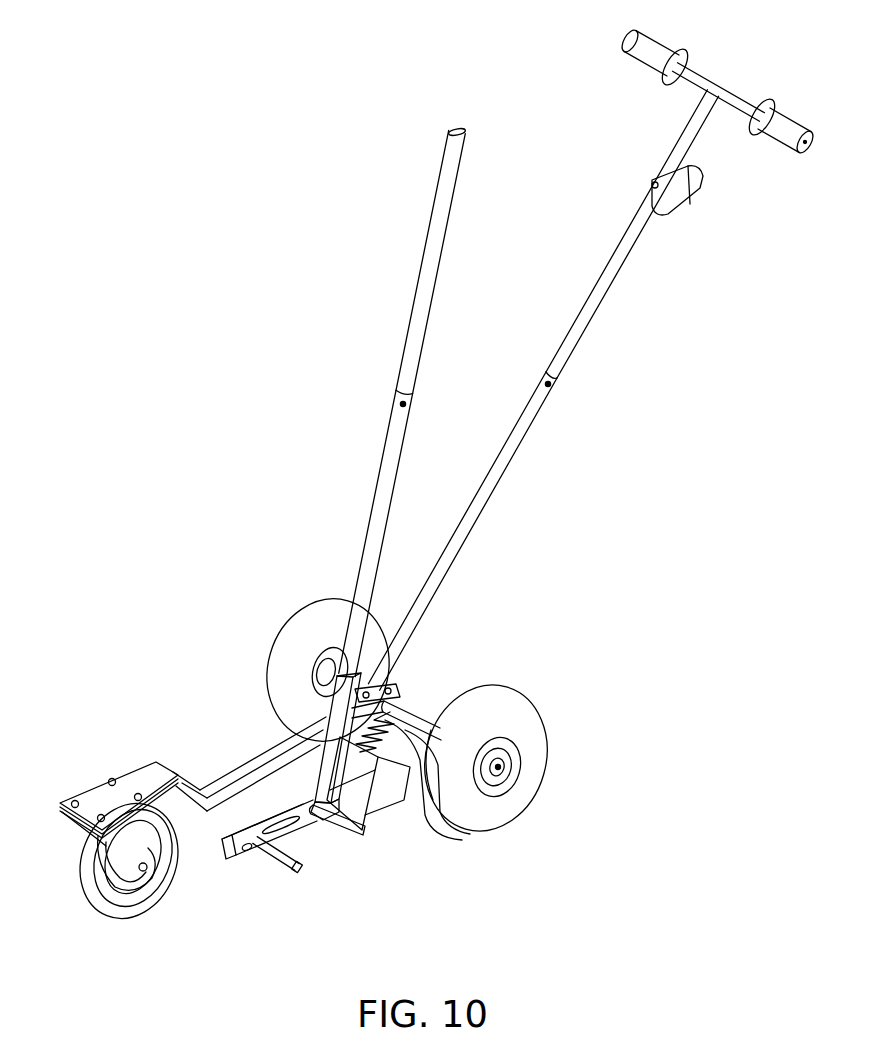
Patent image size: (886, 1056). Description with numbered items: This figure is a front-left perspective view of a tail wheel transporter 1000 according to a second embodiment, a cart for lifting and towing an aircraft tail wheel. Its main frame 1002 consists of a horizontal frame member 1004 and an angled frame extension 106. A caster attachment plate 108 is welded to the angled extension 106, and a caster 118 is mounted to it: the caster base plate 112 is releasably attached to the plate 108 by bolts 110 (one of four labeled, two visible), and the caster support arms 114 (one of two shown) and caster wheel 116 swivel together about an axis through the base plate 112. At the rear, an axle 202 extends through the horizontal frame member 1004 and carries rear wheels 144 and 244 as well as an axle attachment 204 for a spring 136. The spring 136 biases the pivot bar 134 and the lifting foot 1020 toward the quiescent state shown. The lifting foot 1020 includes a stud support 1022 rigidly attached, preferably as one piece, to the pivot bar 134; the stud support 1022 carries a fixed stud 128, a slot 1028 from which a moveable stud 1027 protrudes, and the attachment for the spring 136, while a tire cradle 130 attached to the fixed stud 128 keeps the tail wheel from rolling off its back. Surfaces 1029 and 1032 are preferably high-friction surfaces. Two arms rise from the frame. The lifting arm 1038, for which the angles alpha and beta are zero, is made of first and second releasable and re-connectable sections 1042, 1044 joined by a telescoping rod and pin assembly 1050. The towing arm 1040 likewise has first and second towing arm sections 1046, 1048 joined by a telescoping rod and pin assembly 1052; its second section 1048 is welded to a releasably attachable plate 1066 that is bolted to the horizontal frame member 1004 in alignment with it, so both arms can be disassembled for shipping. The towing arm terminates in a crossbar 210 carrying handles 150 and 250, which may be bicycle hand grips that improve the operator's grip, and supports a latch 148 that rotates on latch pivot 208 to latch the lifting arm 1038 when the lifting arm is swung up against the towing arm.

The tail wheel transporter 1000 is at (293, 108).
The lifting arm 1038 is at (318, 407).
The first releasable and re-connectable section 1042 is at (437, 188).
The second releasable and re-connectable section 1044 is at (382, 512).
The telescoping rod and pin assembly 1050 is at (388, 376).
The towing arm 1040 is at (677, 340).
The first towing arm section 1046 is at (582, 327).
The second towing arm section 1048 is at (503, 462).
The telescoping rod and pin assembly 1052 is at (567, 395).
The crossbar 210 is at (713, 82).
The handle 250 is at (650, 43).
The handle 150 is at (772, 120).
The latch 148 is at (677, 193).
The latch pivot 208 is at (653, 186).
The main frame 1002 is at (188, 720).
The horizontal frame member 1004 is at (258, 753).
The angled frame extension 106 is at (180, 790).
The caster attachment plate 108 is at (132, 772).
The bolts 110 is at (72, 800).
The caster base plate 112 is at (68, 816).
The caster support arms 114 is at (135, 843).
The caster wheel 116 is at (98, 890).
The caster 118 is at (110, 938).
The pivot bar 134 is at (323, 765).
The main frame end member 1066 is at (396, 690).
The axle attachment 204 is at (410, 700).
The rear axle 202 is at (427, 717).
The tire cradle 130 is at (362, 812).
The spring 136 is at (366, 783).
The high-friction surface 1032 is at (380, 803).
The rear wheel 144 is at (528, 712).
The fixed stud 128 is at (343, 827).
The rear wheel 244 is at (305, 628).
The lifting foot 1020 is at (398, 940).
The stud support 1022 is at (223, 858).
The moveable stud 1027 is at (297, 870).
The slot 1028 is at (290, 822).
The high-friction surface 1029 is at (266, 866).